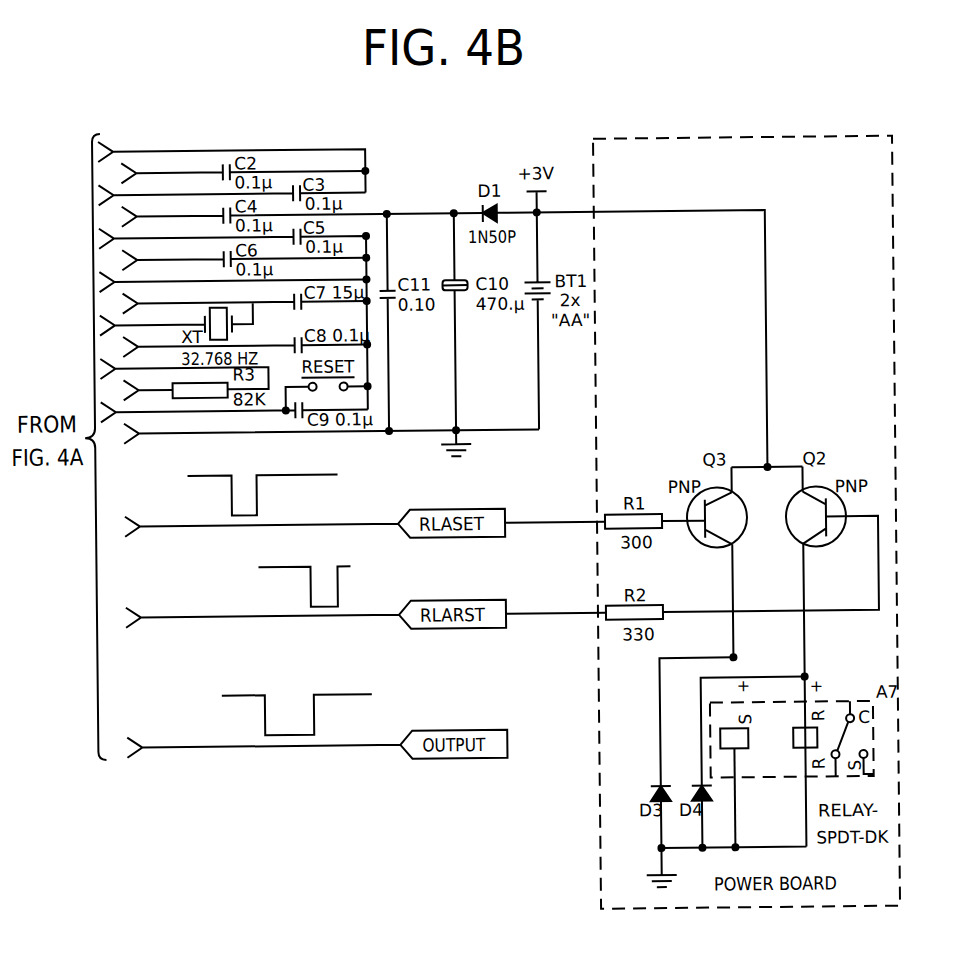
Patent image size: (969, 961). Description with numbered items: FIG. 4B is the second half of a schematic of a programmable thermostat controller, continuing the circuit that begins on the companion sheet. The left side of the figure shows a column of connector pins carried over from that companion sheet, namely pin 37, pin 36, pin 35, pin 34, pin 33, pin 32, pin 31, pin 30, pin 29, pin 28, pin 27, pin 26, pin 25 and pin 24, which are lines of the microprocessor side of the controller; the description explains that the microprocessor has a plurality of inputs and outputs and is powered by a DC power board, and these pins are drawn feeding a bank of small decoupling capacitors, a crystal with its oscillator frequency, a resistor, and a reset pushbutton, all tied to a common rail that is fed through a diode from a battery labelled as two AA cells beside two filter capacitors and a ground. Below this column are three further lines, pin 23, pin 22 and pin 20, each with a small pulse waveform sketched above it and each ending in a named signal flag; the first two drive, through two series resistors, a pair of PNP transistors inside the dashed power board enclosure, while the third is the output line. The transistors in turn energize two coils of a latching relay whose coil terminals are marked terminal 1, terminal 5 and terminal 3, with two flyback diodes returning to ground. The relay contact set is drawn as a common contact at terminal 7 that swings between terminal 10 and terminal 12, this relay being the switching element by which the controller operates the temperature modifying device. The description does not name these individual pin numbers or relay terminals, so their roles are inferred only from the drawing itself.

The connector pin 37 is at (232, 162).
The connector pin 36 is at (244, 167).
The connector pin 35 is at (231, 189).
The connector pin 34 (supply) 34 is at (446, 334).
The connector pin 33 is at (235, 314).
The connector pin 32 is at (245, 254).
The connector pin 31 is at (234, 276).
The connector pin 30 (crystal) 30 is at (246, 303).
The connector pin 29 (crystal) 29 is at (166, 323).
The connector pin 28 is at (246, 341).
The connector pin 27 is at (184, 369).
The connector pin 26 is at (175, 385).
The connector pin 25 (reset) 25 is at (236, 402).
The connector pin 24 (ground) 24 is at (331, 426).
The RLASET relay set signal line 23 is at (415, 521).
The RLARST relay reset signal line 22 is at (502, 574).
The OUTPUT signal line 20 is at (317, 743).
The relay set coil terminal 1 is at (698, 709).
The relay reset coil terminal 5 is at (754, 719).
The relay set coil terminal 3 is at (743, 797).
The relay common contact terminal 7 is at (853, 711).
The relay contact terminal 10 is at (827, 775).
The relay contact terminal 12 is at (874, 775).